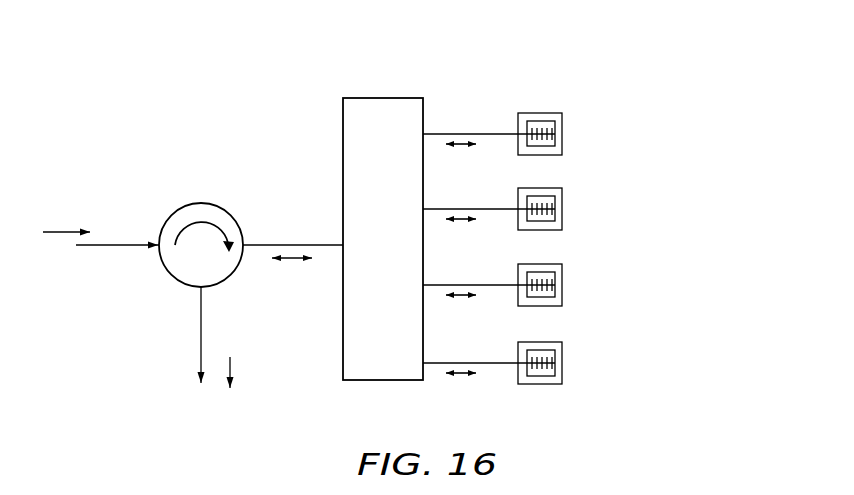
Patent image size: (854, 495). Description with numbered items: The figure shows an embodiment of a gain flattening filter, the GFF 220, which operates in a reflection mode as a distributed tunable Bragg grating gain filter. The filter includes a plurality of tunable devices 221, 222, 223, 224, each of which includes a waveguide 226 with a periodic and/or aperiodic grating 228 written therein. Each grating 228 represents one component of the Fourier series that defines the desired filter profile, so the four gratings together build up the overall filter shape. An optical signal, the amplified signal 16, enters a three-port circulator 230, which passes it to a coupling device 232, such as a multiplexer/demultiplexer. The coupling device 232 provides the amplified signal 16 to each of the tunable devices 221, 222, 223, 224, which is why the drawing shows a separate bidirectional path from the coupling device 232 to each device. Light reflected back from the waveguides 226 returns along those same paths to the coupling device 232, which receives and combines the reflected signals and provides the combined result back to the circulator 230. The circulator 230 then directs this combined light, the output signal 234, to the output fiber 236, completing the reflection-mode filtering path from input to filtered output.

The amplified signal 16 is at (53, 232).
The GFF 220 is at (677, 37).
The tunable device 221 is at (571, 130).
The tunable device 222 is at (571, 205).
The tunable device 223 is at (571, 282).
The tunable device 224 is at (571, 360).
The waveguide 226 is at (553, 113).
The grating 228 is at (535, 128).
The 3-port circulator 230 is at (207, 203).
The coupling device 232 is at (383, 92).
The output signal 234 is at (232, 363).
The output fiber 236 is at (200, 320).